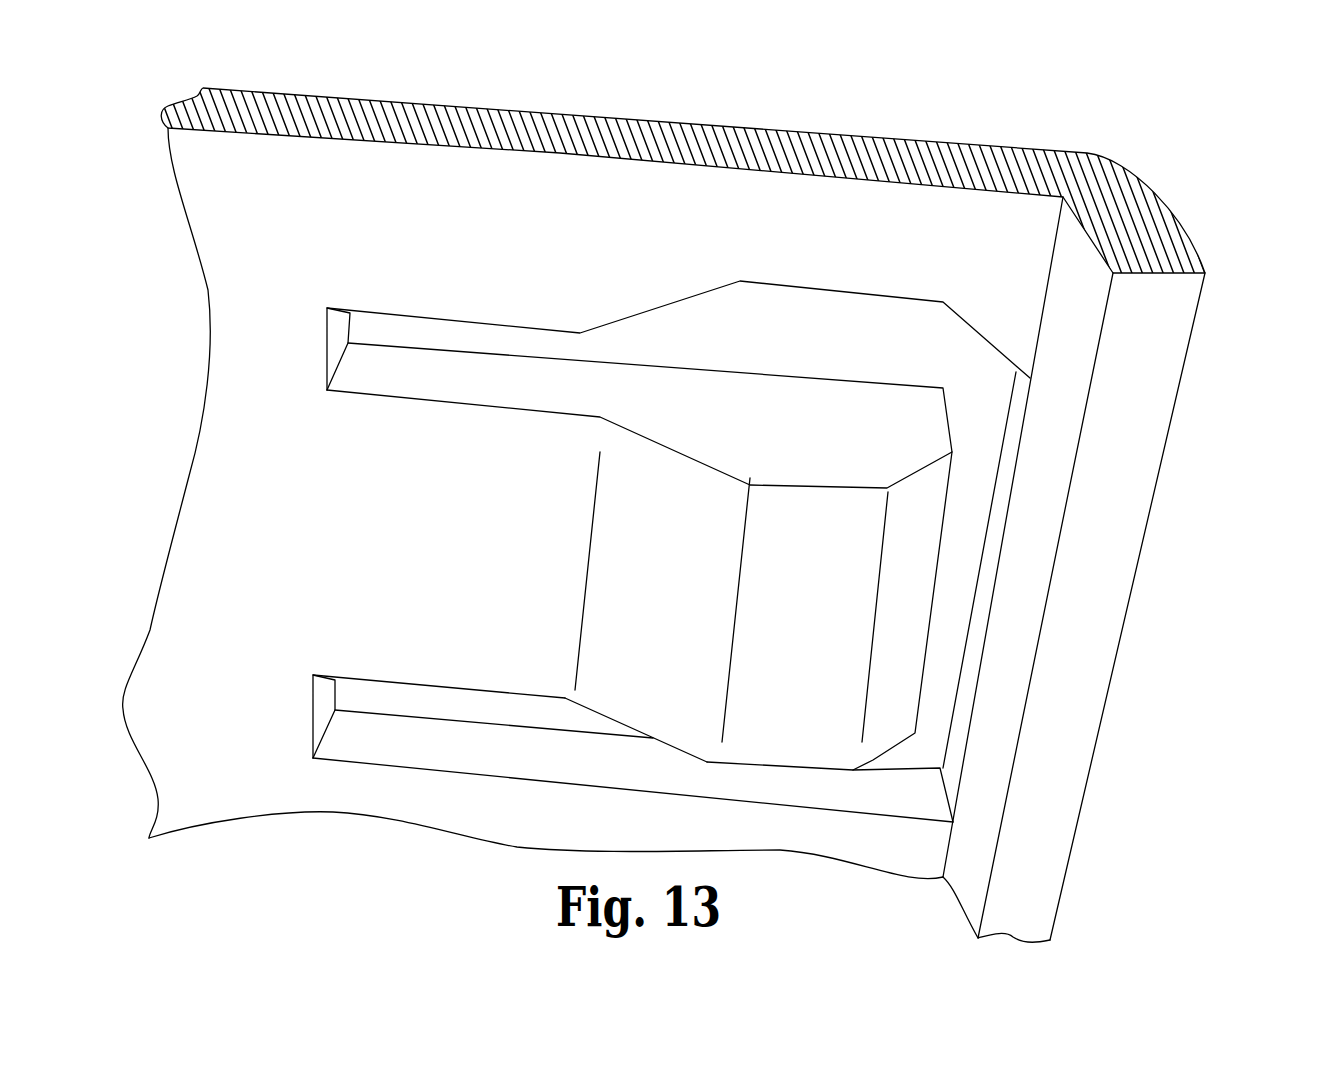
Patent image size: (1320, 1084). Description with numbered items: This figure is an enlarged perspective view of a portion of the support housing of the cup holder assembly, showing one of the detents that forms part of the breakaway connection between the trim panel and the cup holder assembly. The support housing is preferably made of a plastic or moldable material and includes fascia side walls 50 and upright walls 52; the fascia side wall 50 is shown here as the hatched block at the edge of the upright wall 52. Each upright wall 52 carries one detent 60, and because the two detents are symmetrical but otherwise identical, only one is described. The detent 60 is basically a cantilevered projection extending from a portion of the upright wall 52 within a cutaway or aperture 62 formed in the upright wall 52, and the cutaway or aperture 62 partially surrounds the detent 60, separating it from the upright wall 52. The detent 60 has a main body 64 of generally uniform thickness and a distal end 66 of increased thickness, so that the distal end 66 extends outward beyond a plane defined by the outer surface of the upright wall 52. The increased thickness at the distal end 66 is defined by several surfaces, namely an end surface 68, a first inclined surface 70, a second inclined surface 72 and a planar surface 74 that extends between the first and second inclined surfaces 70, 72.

The fascia side wall 50 is at (1168, 220).
The upright wall 52 is at (275, 235).
The detent 60 is at (537, 863).
The cutaway or aperture 62 is at (806, 290).
The main body 64 is at (400, 655).
The distal end 66 is at (780, 742).
The end surface 68 is at (950, 416).
The first inclined surface 70 is at (912, 580).
The second inclined surface 72 is at (653, 688).
The planar surface 74 is at (812, 735).